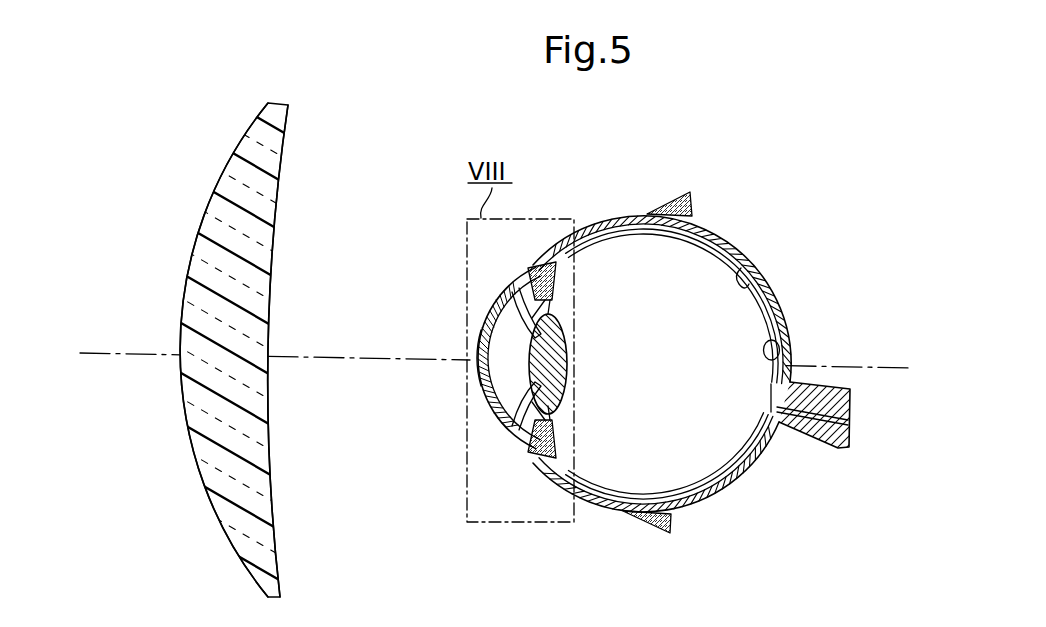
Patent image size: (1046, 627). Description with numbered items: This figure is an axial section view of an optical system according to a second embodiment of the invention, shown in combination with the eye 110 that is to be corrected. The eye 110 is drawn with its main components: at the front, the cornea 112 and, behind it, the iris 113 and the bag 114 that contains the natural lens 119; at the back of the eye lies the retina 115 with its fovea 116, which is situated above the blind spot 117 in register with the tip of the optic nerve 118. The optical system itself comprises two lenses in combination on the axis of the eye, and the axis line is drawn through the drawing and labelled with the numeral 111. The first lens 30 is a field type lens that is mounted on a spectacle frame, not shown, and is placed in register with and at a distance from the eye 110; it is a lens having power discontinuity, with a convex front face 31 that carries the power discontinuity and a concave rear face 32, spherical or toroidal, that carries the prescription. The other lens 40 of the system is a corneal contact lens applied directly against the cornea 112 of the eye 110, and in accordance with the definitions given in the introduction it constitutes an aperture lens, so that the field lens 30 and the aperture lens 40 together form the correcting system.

The lens 30 is at (235, 339).
The front face 31 is at (199, 473).
The rear face 32 is at (281, 498).
The lens 40 is at (478, 367).
The eye 110 is at (634, 337).
The optical axis 111 is at (895, 370).
The cornea 112 is at (491, 398).
The iris 113 is at (527, 333).
The bag 114 is at (559, 423).
The retina 115 is at (739, 281).
The fovea 116 is at (789, 348).
The blind spot 117 is at (773, 402).
The optic nerve 118 is at (827, 425).
The natural lens 119 is at (566, 322).